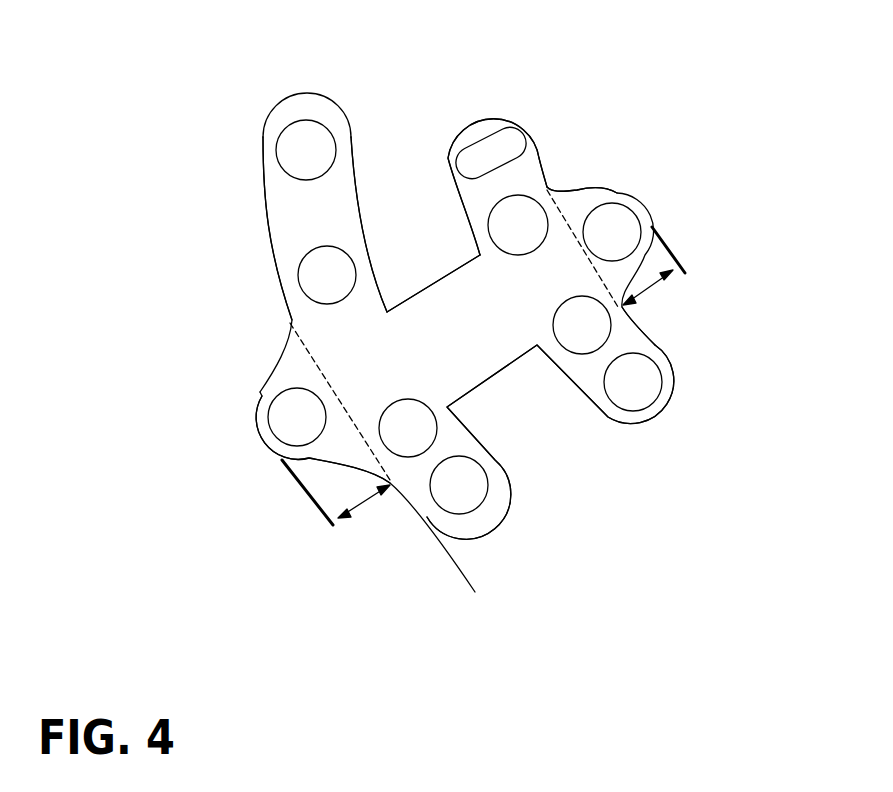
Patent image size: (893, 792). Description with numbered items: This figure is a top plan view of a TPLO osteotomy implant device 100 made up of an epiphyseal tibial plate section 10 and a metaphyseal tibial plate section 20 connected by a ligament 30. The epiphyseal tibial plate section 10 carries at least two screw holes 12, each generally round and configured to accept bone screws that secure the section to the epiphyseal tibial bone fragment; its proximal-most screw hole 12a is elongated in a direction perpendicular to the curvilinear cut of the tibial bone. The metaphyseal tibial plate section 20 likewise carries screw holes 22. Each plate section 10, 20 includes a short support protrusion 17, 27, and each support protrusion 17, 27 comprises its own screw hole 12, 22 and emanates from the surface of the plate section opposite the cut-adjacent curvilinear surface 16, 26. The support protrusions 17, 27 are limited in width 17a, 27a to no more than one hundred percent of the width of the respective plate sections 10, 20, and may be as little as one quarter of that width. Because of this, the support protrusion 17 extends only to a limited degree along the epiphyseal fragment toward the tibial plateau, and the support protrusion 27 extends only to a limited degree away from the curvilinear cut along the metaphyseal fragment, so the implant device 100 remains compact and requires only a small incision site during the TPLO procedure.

The implant device 100 is at (163, 135).
The epiphyseal tibial plate section 10 is at (537, 168).
The screw hole 12 is at (636, 212).
The elongated screw hole 12a is at (463, 137).
The cut-adjacent curvilinear surface 16 is at (582, 412).
The support protrusion 17 is at (576, 208).
The width of support protrusion 17a is at (643, 297).
The metaphyseal tibial plate section 20 is at (283, 208).
The screw hole 22 is at (298, 258).
The cut-adjacent curvilinear surface 26 is at (355, 158).
The support protrusion 27 is at (270, 393).
The width of support protrusion 27a is at (370, 502).
The ligament 30 is at (462, 313).